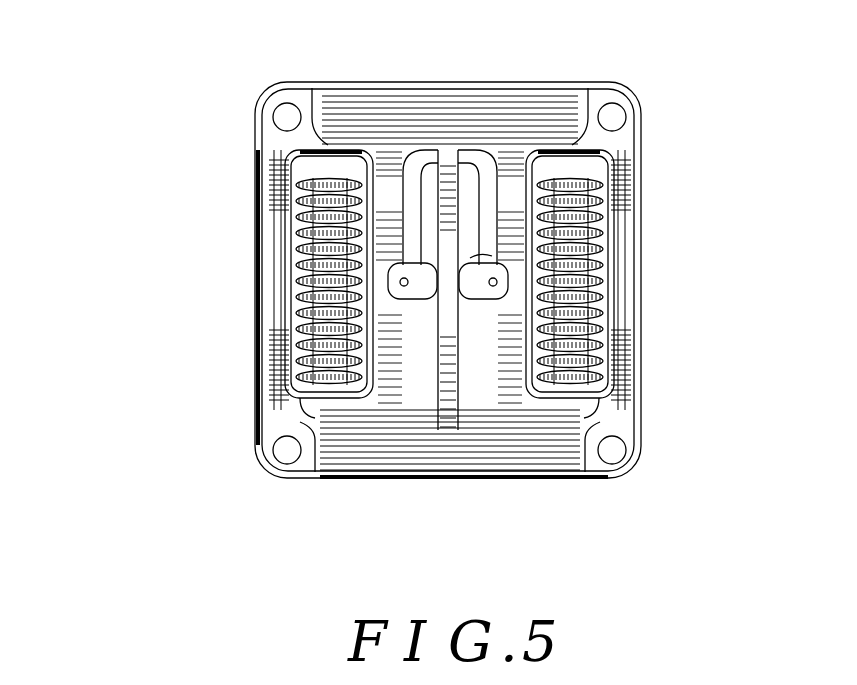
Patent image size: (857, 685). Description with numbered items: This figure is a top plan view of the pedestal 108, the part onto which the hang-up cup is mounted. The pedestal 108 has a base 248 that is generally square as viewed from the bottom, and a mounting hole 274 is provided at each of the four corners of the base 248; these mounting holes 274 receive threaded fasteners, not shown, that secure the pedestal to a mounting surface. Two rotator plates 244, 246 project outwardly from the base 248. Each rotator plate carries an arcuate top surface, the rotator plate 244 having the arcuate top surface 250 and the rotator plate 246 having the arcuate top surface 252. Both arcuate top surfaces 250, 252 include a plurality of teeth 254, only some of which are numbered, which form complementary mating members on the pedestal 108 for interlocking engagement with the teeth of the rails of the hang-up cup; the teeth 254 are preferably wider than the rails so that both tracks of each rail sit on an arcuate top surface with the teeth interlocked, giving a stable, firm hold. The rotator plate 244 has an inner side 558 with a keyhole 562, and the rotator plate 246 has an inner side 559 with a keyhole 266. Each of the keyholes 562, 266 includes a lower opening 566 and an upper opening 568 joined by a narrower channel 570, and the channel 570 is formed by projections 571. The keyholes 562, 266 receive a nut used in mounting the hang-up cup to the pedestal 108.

The pedestal 108 is at (678, 158).
The rotator plate 244 is at (633, 250).
The rotator plate 246 is at (290, 332).
The base 248 is at (463, 458).
The arcuate top surface 250 is at (565, 281).
The arcuate top surface 252 is at (324, 281).
The teeth 254 is at (360, 268).
The keyhole 266 is at (386, 304).
The mounting holes 274 is at (287, 103).
The inner side 558 is at (499, 180).
The inner side 559 is at (396, 180).
The keyhole 562 is at (505, 262).
The lower opening 566 is at (428, 300).
The upper opening 568 is at (398, 266).
The channel 570 is at (508, 253).
The projections 571 is at (402, 266).